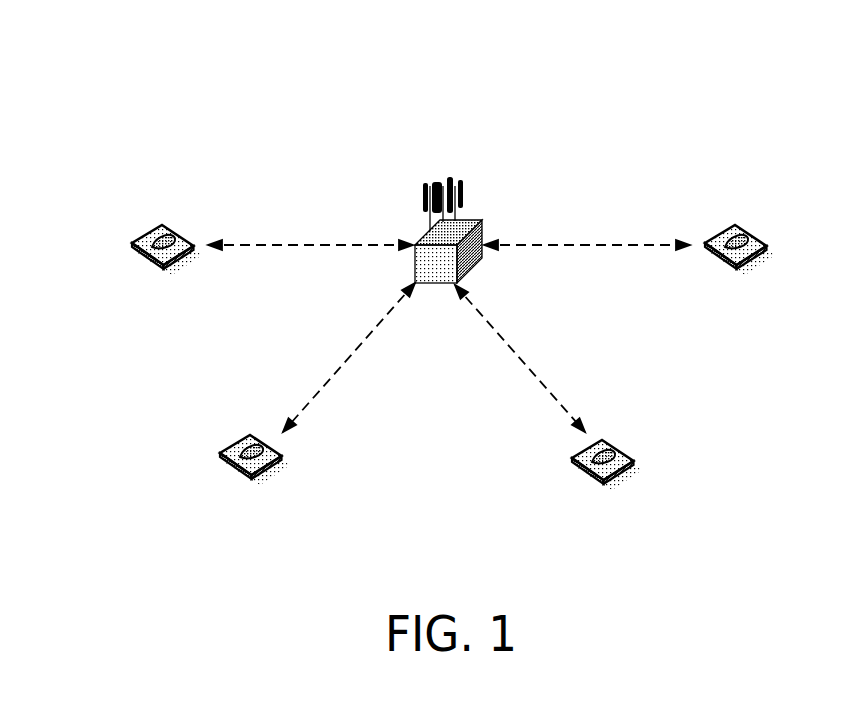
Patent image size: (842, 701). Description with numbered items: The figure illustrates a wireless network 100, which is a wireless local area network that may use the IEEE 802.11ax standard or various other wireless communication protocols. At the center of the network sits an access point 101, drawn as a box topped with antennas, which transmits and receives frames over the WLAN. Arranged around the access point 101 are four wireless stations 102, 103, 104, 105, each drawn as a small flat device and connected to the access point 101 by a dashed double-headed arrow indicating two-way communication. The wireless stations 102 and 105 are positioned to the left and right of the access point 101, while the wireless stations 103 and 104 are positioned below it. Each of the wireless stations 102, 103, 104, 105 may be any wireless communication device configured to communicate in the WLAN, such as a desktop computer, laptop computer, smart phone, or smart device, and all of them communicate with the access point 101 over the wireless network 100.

The wireless network 100 is at (661, 78).
The access point 101 is at (434, 288).
The wireless station 102 is at (157, 268).
The wireless station 103 is at (247, 480).
The wireless station 104 is at (605, 485).
The wireless station 105 is at (737, 268).